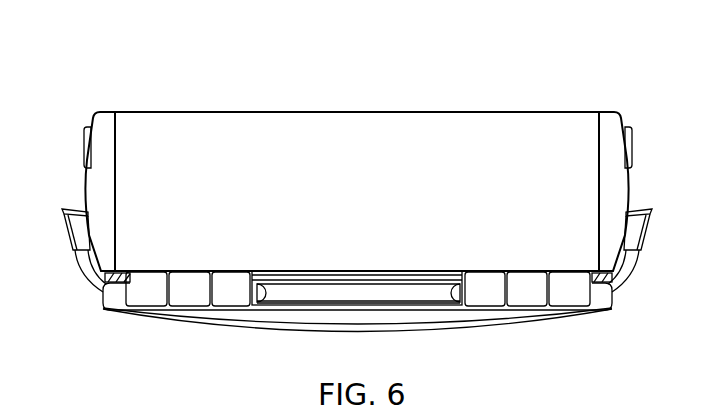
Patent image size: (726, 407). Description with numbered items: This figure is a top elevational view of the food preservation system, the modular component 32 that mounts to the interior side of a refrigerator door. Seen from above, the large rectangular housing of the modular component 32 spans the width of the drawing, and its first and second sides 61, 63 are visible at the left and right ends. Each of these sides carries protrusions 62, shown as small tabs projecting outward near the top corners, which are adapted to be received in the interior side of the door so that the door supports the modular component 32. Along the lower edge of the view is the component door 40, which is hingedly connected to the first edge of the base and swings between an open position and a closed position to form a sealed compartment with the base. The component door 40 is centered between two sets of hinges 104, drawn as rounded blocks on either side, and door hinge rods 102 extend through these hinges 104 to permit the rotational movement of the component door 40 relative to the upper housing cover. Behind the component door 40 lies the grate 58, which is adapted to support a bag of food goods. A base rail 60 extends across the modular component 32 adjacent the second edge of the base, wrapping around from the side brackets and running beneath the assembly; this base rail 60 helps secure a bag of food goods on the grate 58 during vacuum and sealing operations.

The modular component 32 is at (205, 88).
The protrusions 62 is at (82, 147).
The first side 61 is at (85, 192).
The second side 63 is at (630, 185).
The base rail 60 is at (632, 277).
The hinges 104 is at (232, 282).
The component door 40 is at (299, 290).
The grate 58 is at (347, 318).
The door hinge rods 102 is at (258, 302).